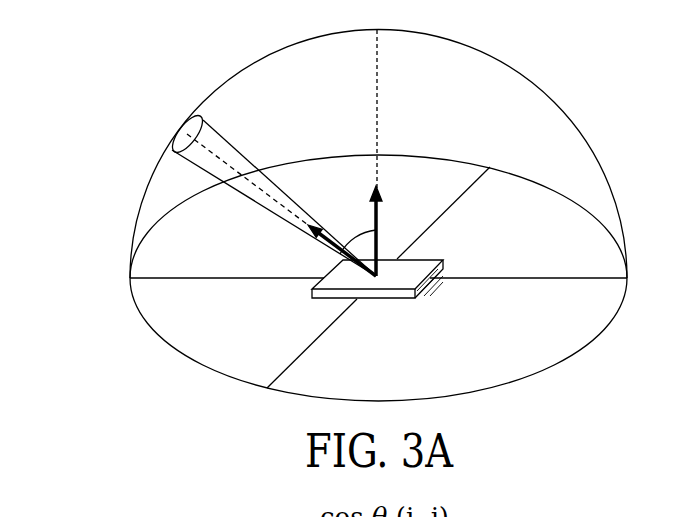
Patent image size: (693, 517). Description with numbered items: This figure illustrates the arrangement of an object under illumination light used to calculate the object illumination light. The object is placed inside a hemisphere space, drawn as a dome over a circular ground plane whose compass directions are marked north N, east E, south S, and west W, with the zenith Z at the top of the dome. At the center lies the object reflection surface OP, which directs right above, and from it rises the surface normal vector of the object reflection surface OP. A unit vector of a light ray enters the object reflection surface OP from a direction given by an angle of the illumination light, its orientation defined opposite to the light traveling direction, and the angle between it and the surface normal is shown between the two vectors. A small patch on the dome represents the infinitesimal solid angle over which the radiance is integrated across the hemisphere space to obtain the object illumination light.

The zenith axis Z is at (375, 18).
The south direction S is at (215, 283).
The north direction N is at (545, 283).
The west direction W is at (455, 199).
The east direction E is at (305, 361).
The object reflection surface OP is at (408, 266).